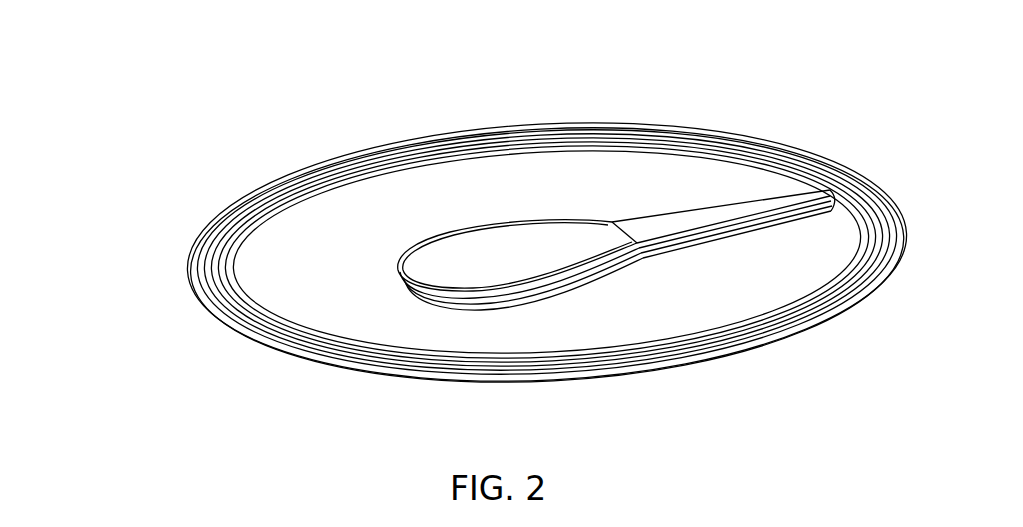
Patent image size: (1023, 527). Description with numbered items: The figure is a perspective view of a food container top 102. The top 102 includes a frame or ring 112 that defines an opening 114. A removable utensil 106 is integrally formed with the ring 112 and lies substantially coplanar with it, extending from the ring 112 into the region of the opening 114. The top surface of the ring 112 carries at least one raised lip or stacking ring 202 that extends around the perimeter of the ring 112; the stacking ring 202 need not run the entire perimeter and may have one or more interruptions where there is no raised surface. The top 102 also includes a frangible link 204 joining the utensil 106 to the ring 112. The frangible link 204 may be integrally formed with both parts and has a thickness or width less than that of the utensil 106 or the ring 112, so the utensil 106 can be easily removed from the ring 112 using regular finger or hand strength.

The food container top 102 is at (562, 271).
The stacking ring 202 is at (593, 250).
The ring 112 is at (509, 265).
The opening 114 is at (547, 312).
The removable utensil 106 is at (543, 270).
The frangible link 204 is at (766, 173).